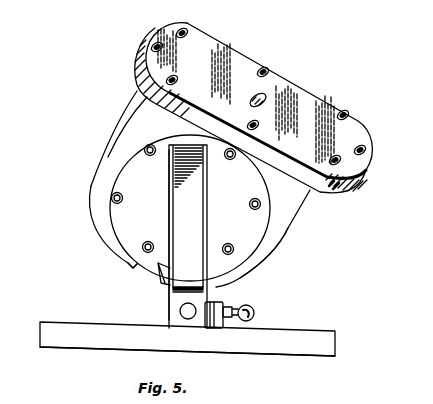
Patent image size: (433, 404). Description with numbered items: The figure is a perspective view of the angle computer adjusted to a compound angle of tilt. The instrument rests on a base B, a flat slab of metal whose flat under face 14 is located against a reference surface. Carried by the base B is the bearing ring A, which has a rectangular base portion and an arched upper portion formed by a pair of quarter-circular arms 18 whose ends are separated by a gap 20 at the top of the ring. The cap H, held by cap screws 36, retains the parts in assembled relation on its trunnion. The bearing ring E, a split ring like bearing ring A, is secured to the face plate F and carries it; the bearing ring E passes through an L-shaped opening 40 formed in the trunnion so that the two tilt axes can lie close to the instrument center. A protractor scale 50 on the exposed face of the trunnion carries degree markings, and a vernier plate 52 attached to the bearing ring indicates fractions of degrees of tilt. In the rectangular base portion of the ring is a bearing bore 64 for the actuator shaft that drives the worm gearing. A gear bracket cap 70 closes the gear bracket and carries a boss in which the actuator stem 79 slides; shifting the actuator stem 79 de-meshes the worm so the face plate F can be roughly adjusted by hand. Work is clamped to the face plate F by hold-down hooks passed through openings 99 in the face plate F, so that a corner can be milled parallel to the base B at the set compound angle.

The face plate F is at (214, 37).
The openings 99 is at (343, 112).
The bearing ring E is at (294, 221).
The quarter-circular arms 18 is at (103, 245).
The gap 20 is at (133, 267).
The cap H is at (151, 197).
The cap screws 36 is at (254, 211).
The bearing ring A is at (209, 217).
The opening 40 is at (208, 180).
The protractor scale 50 is at (170, 217).
The vernier plate 52 is at (172, 296).
The bearing bore 64 is at (180, 313).
The gear bracket cap 70 is at (217, 329).
The actuator stem 79 is at (254, 313).
The base B is at (40, 321).
The flat under face 14 is at (49, 349).